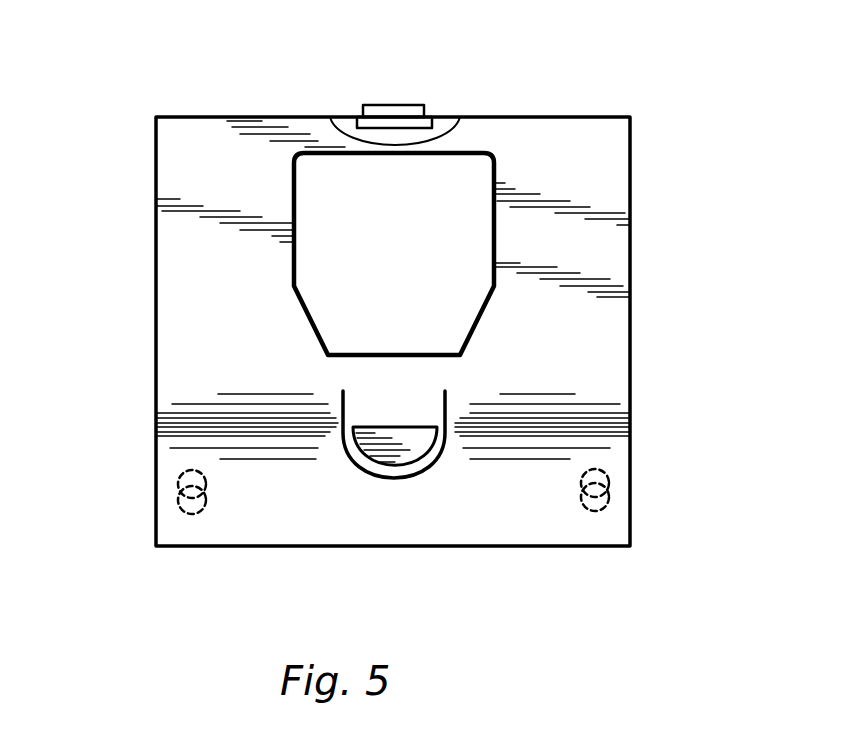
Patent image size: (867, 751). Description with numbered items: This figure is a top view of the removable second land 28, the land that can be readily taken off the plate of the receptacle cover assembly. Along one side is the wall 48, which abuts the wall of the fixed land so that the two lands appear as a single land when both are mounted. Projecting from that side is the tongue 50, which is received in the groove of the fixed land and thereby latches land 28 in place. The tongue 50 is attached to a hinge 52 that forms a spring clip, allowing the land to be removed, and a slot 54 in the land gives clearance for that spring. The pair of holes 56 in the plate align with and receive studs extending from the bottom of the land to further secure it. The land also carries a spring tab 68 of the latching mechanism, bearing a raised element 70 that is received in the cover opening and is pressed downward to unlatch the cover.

The second land 28 is at (598, 337).
The wall 48 is at (582, 117).
The tongue 50 is at (396, 105).
The hinge 52 is at (362, 124).
The slot 54 is at (458, 131).
The holes 56 is at (180, 478).
The spring tab 68 is at (348, 452).
The raised element 70 is at (402, 443).